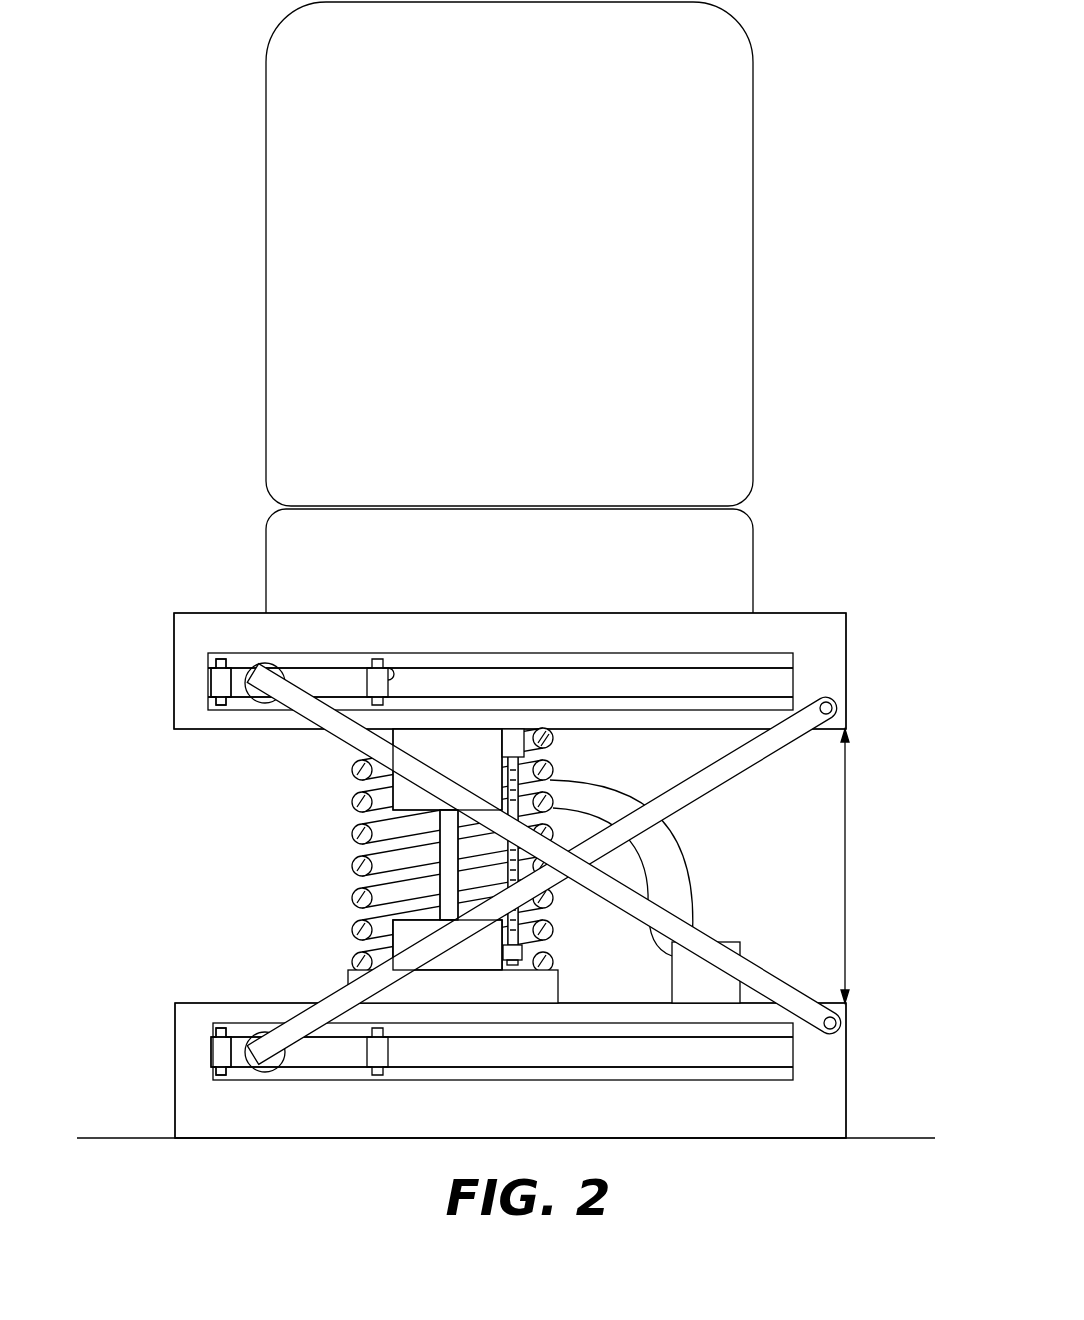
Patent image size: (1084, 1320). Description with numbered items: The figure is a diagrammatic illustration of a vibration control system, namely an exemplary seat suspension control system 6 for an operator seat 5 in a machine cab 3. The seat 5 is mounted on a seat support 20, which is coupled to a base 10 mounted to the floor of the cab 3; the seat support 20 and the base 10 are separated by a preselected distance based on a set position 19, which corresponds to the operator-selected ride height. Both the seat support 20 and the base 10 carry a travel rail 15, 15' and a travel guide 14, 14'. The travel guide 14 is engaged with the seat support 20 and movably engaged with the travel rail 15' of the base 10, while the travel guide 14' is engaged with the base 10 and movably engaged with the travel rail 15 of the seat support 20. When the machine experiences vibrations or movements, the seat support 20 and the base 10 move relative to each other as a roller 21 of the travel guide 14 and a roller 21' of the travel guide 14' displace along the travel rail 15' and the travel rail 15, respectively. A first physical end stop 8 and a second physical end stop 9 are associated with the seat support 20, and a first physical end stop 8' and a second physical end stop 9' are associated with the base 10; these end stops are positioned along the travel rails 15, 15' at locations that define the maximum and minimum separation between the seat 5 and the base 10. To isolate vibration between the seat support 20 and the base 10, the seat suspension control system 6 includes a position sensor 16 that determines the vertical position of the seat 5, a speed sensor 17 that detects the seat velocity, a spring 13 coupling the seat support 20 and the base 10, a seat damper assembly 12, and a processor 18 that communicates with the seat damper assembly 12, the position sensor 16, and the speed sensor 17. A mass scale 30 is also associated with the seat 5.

The cab 3 is at (103, 1137).
The seat 5 is at (266, 140).
The seat suspension control system 6 is at (147, 855).
The first physical end stop 8 is at (168, 649).
The first physical end stop 8' is at (206, 992).
The second physical end stop 9 is at (361, 620).
The second physical end stop 9' is at (354, 1078).
The base 10 is at (835, 1080).
The seat damper assembly 12 is at (494, 992).
The spring 13 is at (352, 864).
The travel guide 14 is at (541, 880).
The travel guide 14' is at (543, 849).
The travel rail 15 is at (500, 618).
The travel rail 15' is at (503, 1085).
The position sensor 16 is at (555, 937).
The speed sensor 17 is at (555, 742).
The processor 18 is at (709, 993).
The set position 19 is at (855, 862).
The seat support 20 is at (830, 613).
The roller 21 is at (243, 1113).
The roller 21' is at (231, 613).
The mass scale 30 is at (560, 995).